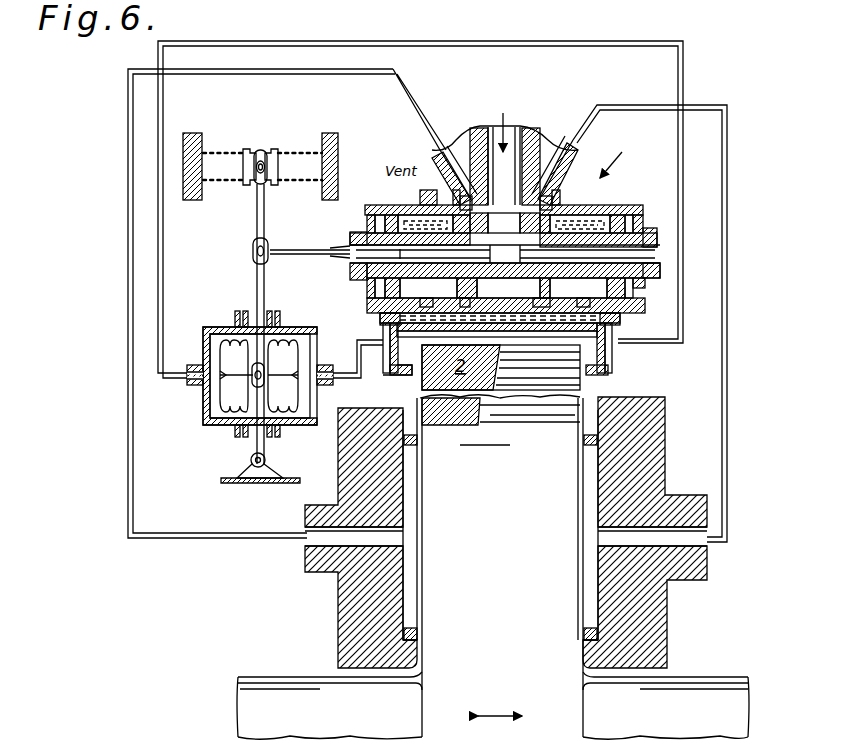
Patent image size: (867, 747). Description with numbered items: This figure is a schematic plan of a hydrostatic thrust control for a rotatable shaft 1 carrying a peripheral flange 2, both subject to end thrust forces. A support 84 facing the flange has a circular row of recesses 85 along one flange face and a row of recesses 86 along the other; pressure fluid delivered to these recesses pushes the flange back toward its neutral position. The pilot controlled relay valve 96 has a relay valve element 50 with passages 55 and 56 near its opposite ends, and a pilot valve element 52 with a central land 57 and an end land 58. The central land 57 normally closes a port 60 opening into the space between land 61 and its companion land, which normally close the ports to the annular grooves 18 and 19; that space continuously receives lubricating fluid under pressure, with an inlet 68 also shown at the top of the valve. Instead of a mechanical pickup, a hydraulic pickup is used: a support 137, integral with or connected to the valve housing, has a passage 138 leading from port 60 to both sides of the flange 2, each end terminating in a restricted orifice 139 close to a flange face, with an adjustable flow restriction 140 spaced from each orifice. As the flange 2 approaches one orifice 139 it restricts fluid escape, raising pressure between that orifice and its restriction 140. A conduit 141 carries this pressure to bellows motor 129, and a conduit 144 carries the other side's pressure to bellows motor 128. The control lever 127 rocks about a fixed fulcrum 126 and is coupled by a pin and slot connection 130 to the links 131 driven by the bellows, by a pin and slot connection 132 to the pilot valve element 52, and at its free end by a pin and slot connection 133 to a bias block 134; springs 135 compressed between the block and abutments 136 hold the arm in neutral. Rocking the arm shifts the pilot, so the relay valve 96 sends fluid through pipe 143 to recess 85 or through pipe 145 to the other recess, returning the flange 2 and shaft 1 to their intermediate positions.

The rotatable shaft 1 is at (726, 693).
The peripheral flange 2 is at (500, 566).
The annular groove 18 is at (541, 204).
The annular groove 19 is at (470, 203).
The relay valve element 50 is at (490, 263).
The pilot valve element 52 is at (304, 248).
The passage 55 is at (408, 207).
The passage 56 is at (602, 212).
The central land 57 is at (504, 256).
The end land 58 is at (662, 262).
The port 60 is at (505, 308).
The land 61 is at (457, 288).
The inlet passage 68 is at (512, 173).
The support 84 is at (338, 612).
The recess 85 is at (410, 484).
The recess 86 is at (590, 484).
The relay valve 96 is at (630, 208).
The fulcrum 126 is at (250, 460).
The control lever 127 is at (266, 293).
The bellows motor 128 is at (203, 407).
The bellows motor 129 is at (308, 343).
The pin and slot connection 130 is at (256, 384).
The link 131 is at (233, 373).
The pin and slot connection 132 is at (253, 251).
The pin and slot connection 133 is at (258, 186).
The bias block 134 is at (259, 147).
The spring 135 is at (218, 147).
The abutment 136 is at (181, 137).
The support 137 is at (382, 318).
The passage 138 is at (555, 345).
The restricted orifice 139 is at (389, 376).
The adjustable flow restriction 140 is at (383, 325).
The conduit 141 is at (345, 368).
The pipe 143 is at (127, 466).
The conduit 144 is at (684, 323).
The pipe 145 is at (728, 402).